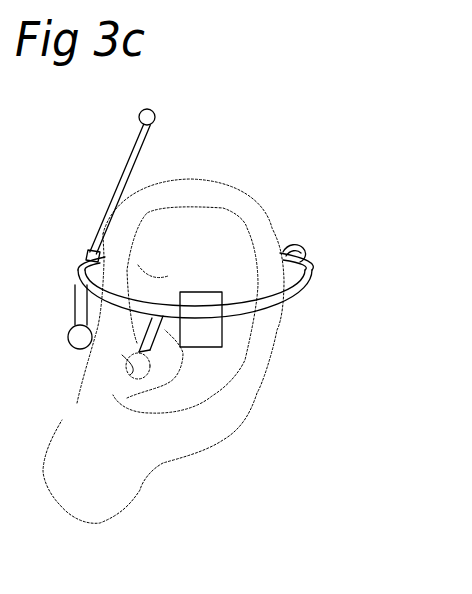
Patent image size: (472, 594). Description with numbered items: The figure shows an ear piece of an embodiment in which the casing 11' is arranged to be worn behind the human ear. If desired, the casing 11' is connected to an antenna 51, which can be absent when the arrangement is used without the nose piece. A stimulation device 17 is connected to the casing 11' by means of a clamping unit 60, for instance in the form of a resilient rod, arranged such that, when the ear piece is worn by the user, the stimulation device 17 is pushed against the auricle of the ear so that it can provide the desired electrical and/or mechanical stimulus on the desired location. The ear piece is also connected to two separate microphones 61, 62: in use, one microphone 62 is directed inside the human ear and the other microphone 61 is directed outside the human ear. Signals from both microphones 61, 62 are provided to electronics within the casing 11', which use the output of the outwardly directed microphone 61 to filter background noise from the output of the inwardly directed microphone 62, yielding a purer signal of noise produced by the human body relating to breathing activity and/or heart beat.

The antenna 51 is at (128, 165).
The casing 11' is at (310, 232).
The clamping unit 60 is at (302, 288).
The microphone 61 is at (83, 313).
The microphone 62 is at (133, 370).
The stimulation device 17 is at (212, 338).